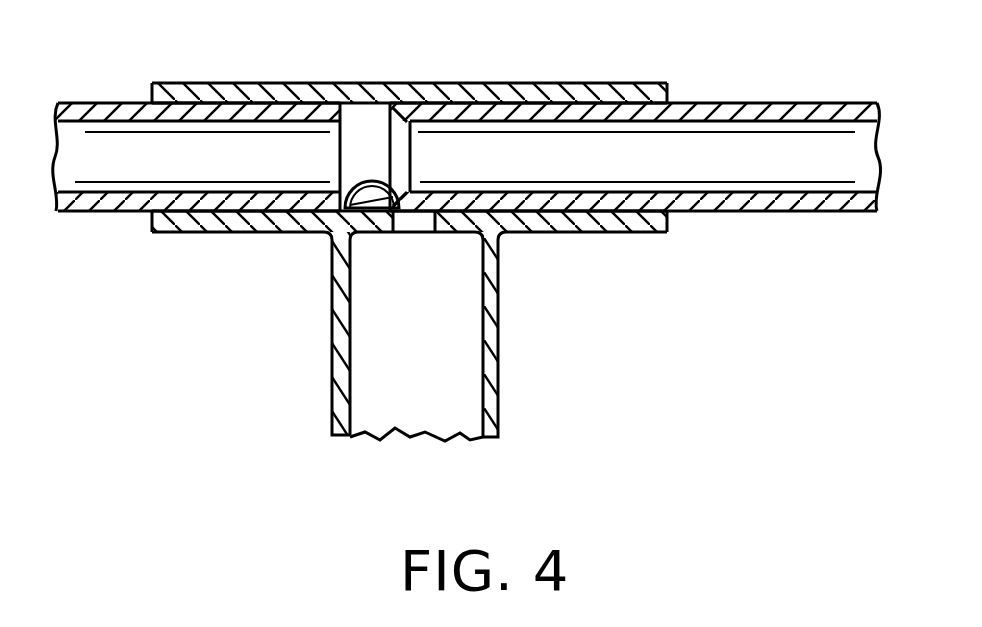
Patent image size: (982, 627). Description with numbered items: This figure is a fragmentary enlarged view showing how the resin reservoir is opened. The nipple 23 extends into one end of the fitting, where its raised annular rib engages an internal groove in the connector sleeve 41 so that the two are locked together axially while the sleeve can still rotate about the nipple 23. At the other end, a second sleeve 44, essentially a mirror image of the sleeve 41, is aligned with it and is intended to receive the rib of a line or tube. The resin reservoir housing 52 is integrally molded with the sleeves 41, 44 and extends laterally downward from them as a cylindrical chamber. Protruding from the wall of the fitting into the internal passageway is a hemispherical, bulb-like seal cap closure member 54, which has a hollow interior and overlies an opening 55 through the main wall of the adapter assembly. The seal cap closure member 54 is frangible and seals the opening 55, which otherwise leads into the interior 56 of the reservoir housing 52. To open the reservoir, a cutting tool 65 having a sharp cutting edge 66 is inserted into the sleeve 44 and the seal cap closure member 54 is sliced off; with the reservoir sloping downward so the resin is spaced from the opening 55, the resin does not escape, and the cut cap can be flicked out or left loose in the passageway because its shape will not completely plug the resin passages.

The nipple 23 is at (91, 103).
The cutting tool 65 is at (787, 213).
The cutting edge 66 is at (387, 135).
The connector sleeve 41 is at (187, 232).
The second sleeve 44 is at (637, 233).
The resin reservoir housing 52 is at (322, 301).
The interior of the resin reservoir 56 is at (375, 252).
The opening 55 is at (423, 222).
The seal cap closure member 54 is at (363, 182).